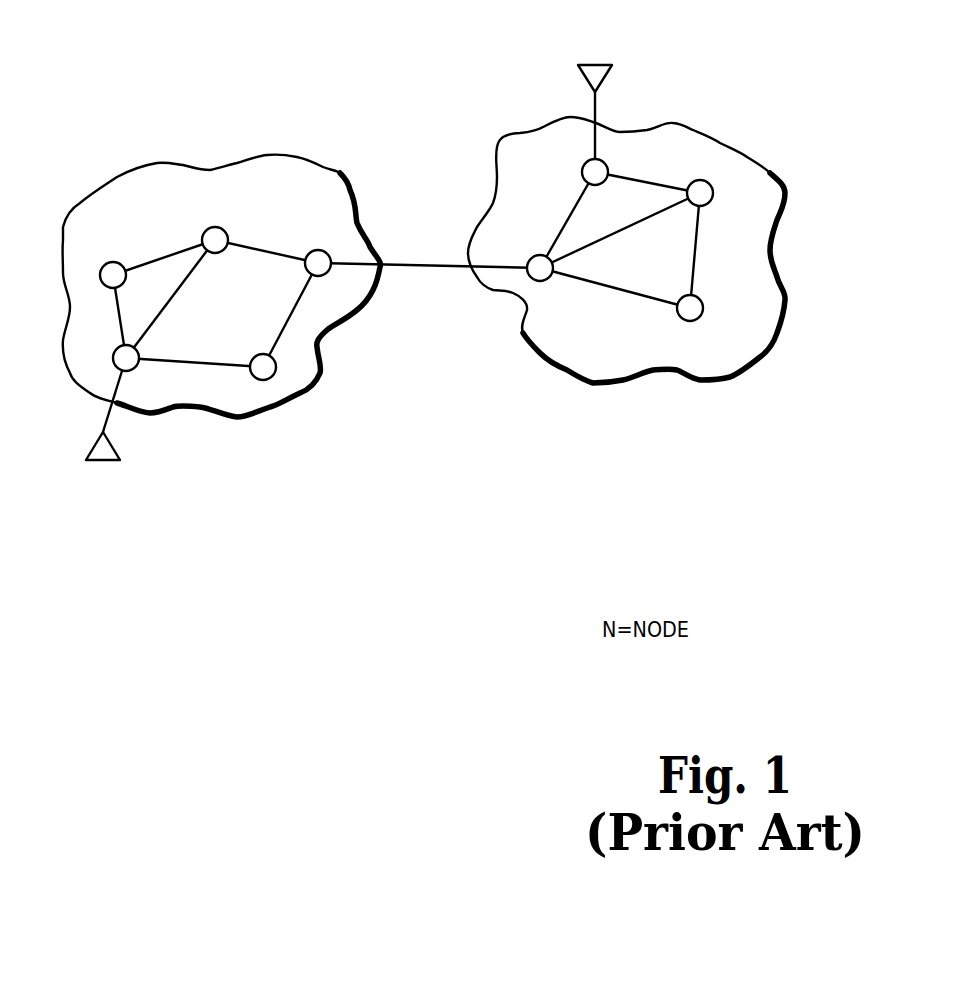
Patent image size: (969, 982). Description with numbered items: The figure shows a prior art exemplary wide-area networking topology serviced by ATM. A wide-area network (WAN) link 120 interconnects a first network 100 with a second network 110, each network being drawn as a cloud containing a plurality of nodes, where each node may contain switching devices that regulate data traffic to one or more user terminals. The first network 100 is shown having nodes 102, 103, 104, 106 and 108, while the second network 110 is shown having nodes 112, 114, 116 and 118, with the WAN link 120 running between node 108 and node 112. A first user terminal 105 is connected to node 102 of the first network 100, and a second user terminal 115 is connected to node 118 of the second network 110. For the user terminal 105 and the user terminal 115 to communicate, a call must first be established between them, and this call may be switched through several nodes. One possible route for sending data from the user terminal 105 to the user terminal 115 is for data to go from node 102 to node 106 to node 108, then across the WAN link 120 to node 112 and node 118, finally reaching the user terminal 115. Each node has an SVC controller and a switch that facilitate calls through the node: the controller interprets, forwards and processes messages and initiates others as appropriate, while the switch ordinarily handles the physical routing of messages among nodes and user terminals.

The first network 100 is at (245, 420).
The node 102 is at (145, 352).
The node 103 is at (121, 262).
The node 104 is at (232, 229).
The first user terminal 105 is at (140, 455).
The node 106 is at (280, 366).
The node 108 is at (299, 268).
The second network 110 is at (752, 365).
The node 112 is at (547, 282).
The node 114 is at (685, 321).
The second user terminal 115 is at (653, 91).
The node 116 is at (715, 201).
The node 118 is at (575, 171).
The wide-area network (WAN) link 120 is at (448, 263).